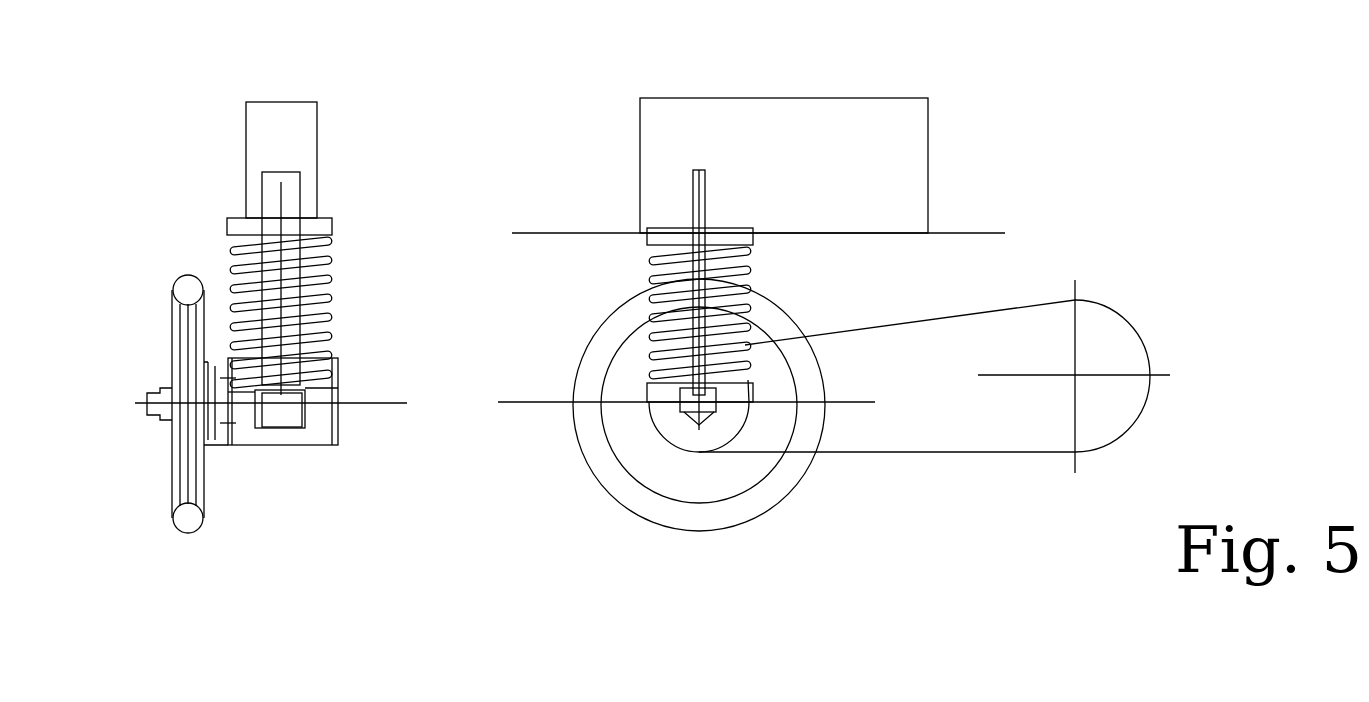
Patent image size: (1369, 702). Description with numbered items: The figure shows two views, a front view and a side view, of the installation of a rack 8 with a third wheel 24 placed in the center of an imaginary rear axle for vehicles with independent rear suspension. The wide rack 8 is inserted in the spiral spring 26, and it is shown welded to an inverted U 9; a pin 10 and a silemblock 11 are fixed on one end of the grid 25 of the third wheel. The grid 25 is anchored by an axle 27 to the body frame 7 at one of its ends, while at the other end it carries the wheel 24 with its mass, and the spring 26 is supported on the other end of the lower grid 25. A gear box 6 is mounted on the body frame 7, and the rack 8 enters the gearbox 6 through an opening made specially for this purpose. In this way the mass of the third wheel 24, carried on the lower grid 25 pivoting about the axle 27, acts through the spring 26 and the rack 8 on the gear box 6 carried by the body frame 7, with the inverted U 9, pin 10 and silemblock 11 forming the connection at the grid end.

The gear box 6 is at (587, 139).
The body frame 7 is at (799, 266).
The rack 8 is at (268, 193).
The inverted U 9 is at (505, 380).
The pin 10 is at (522, 375).
The silemblock 11 is at (290, 418).
The third wheel 24 is at (170, 462).
The grid of the third wheel 25 is at (247, 435).
The spiral spring 26 is at (490, 201).
The axle 27 is at (1176, 361).